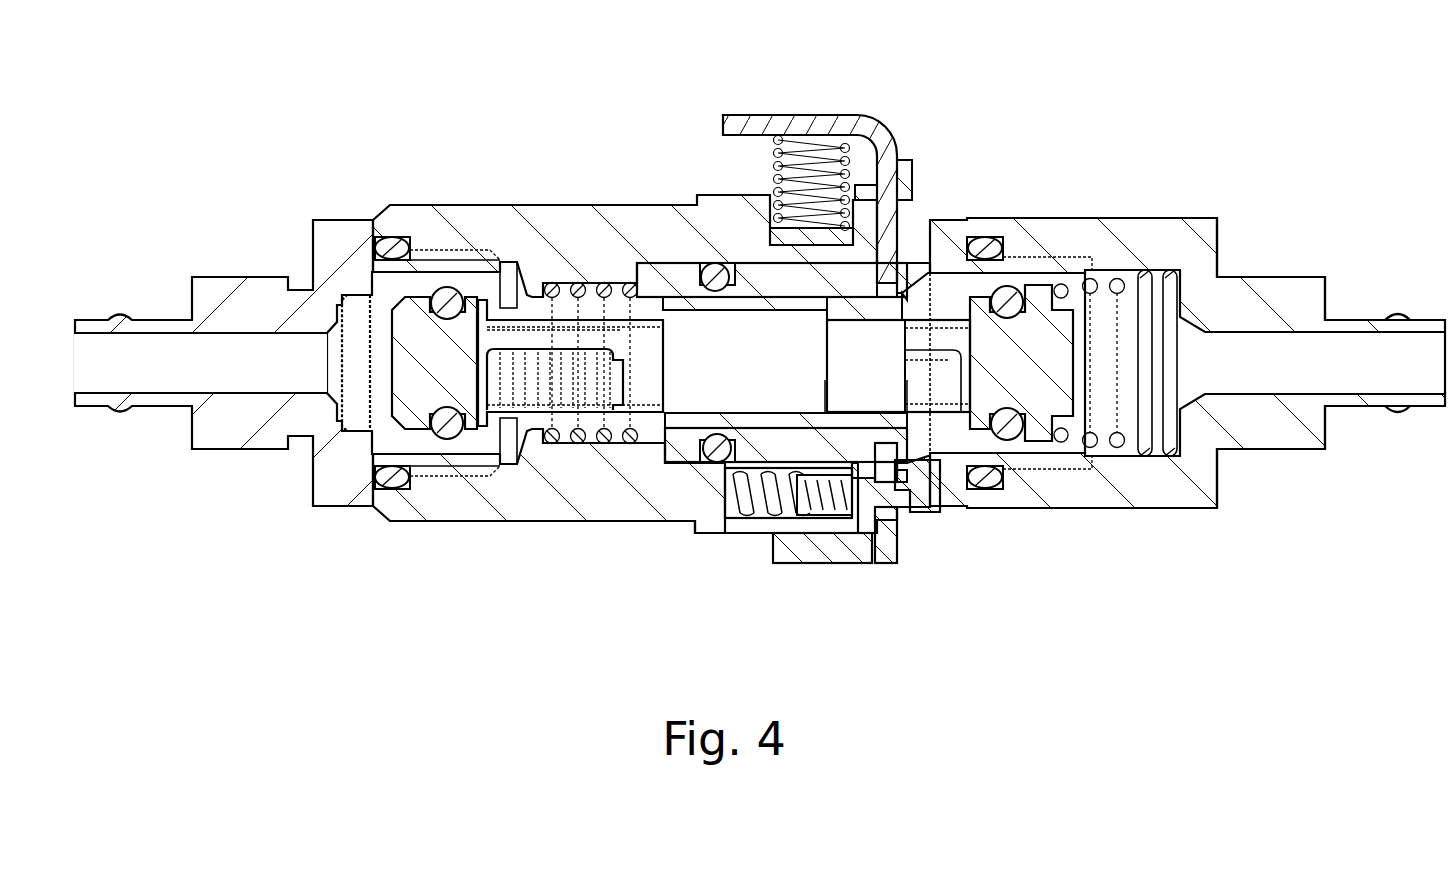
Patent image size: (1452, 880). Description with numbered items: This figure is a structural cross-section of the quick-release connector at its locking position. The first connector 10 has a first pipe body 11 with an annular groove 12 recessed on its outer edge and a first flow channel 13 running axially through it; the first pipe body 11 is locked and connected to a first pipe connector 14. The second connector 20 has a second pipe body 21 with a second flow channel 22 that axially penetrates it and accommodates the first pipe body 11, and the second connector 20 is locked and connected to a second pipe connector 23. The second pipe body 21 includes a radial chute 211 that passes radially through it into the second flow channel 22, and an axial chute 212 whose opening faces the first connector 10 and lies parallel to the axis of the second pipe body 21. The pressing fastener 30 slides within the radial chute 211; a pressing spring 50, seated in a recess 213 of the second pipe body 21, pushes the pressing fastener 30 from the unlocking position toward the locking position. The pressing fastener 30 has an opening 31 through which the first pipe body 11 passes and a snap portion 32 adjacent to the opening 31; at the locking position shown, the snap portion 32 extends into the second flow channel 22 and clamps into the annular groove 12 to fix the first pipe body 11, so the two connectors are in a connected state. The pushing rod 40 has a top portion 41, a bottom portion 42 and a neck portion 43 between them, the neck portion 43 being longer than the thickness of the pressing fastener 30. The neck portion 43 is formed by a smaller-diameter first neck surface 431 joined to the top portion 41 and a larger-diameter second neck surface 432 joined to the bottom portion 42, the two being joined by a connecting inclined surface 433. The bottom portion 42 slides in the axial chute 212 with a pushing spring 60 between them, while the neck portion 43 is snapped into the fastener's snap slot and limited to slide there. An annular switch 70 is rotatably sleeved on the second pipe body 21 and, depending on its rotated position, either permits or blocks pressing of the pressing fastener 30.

The first connector 10 is at (917, 259).
The first pipe body 11 is at (752, 275).
The annular groove 12 is at (956, 262).
The first flow channel 13 is at (768, 470).
The first pipe connector 14 is at (1219, 215).
The second connector 20 is at (573, 201).
The second pipe body 21 is at (507, 222).
The second flow channel 22 is at (566, 398).
The second pipe connector 23 is at (226, 268).
The pressing fastener 30 is at (866, 109).
The opening 31 is at (806, 299).
The snap portion 32 is at (905, 475).
The pushing rod 40 is at (832, 531).
The top portion 41 is at (937, 502).
The bottom portion 42 is at (797, 510).
The neck portion 43 is at (830, 506).
The pressing spring 50 is at (808, 157).
The pushing spring 60 is at (745, 478).
The annular switch 70 is at (814, 512).
The radial chute 211 is at (908, 232).
The axial chute 212 is at (790, 525).
The recess 213 is at (786, 262).
The first neck surface 431 is at (892, 508).
The second neck surface 432 is at (884, 484).
The connecting inclined surface 433 is at (870, 480).